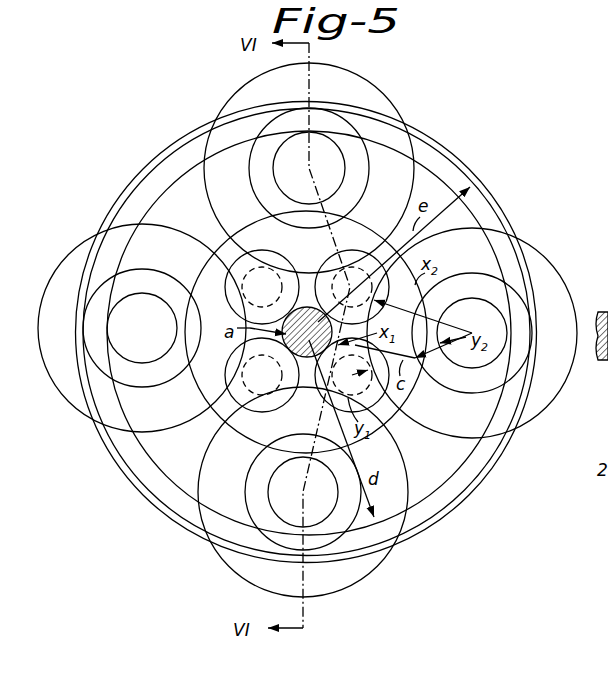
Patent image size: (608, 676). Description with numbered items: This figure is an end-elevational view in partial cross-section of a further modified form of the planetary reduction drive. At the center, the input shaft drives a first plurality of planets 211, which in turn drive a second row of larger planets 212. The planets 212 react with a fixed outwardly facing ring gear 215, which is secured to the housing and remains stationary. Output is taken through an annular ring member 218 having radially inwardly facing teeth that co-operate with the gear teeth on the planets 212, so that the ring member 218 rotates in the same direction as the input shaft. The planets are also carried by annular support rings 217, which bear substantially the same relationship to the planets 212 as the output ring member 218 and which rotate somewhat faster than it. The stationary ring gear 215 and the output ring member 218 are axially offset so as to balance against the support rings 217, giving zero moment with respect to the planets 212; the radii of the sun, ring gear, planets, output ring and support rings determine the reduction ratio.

The planets 211 is at (322, 251).
The planets 212 is at (288, 167).
The fixed outwardly facing ring gear 215 is at (607, 292).
The annular support rings 217 is at (462, 503).
The annular ring member 218 is at (160, 194).